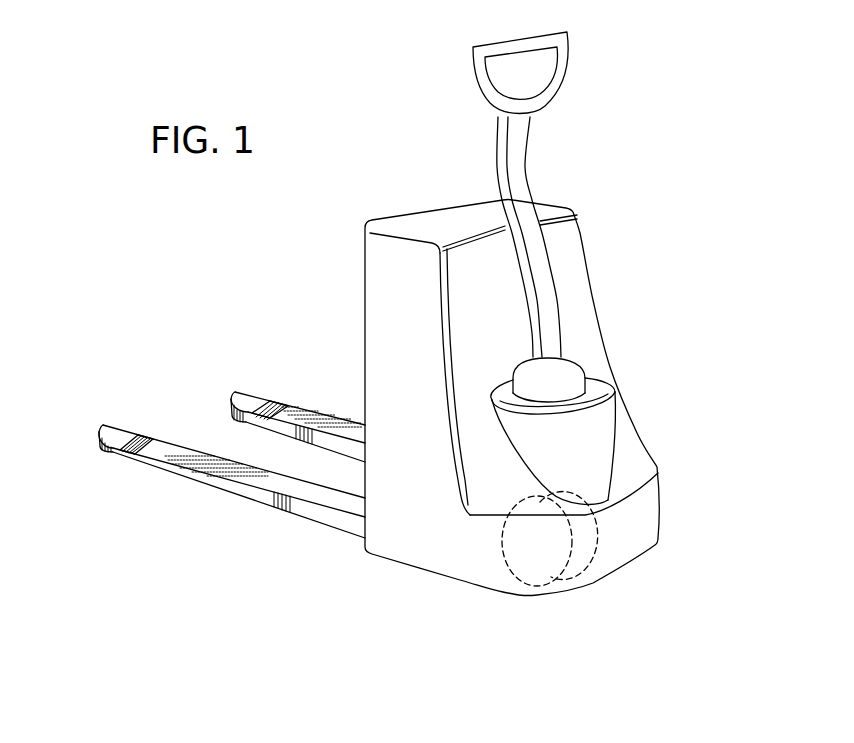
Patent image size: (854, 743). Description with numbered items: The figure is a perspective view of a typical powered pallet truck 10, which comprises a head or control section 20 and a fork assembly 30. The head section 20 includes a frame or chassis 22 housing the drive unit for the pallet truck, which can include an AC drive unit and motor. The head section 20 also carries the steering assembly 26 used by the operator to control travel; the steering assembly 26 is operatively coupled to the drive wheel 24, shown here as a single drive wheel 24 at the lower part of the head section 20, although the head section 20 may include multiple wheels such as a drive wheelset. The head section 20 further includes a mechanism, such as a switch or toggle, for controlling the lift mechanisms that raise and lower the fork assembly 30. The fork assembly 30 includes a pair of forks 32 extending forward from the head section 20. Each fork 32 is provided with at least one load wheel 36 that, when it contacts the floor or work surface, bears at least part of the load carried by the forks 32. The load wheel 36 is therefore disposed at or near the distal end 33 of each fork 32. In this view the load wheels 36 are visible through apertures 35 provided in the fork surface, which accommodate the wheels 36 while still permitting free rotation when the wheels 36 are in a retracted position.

The powered pallet truck 10 is at (687, 135).
The head section 20 is at (366, 640).
The housing 22 is at (396, 473).
The drive wheel 24 is at (578, 562).
The steering assembly 26 is at (478, 57).
The fork assembly 30 is at (80, 640).
The fork 32 is at (310, 420).
The distal end 33 is at (245, 395).
The aperture 35 is at (258, 407).
The load wheel 36 is at (270, 405).